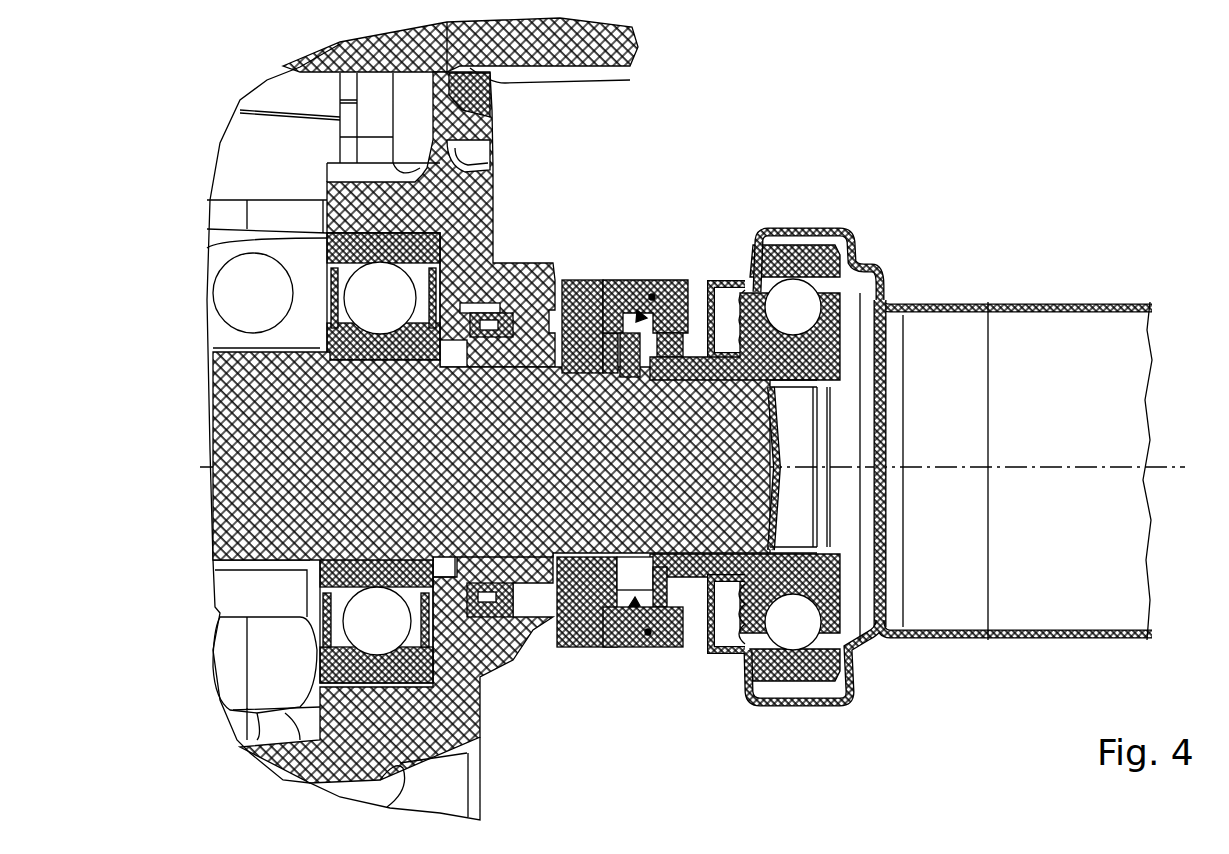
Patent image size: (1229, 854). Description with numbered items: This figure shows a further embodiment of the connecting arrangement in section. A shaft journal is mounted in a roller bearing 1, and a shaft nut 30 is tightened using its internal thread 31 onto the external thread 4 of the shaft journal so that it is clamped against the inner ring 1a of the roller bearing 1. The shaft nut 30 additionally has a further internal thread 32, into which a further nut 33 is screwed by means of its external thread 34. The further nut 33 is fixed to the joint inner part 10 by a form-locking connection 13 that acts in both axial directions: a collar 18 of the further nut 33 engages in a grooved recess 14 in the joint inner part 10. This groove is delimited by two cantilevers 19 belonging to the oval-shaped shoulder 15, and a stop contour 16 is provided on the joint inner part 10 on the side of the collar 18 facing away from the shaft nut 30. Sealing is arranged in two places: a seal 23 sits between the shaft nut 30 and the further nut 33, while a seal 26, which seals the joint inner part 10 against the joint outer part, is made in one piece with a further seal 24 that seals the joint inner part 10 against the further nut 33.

The roller bearing 1 is at (440, 240).
The inner ring 1a is at (478, 312).
The external thread 4 is at (590, 357).
The joint inner part 10 is at (847, 647).
The form-locking connection 13 is at (635, 600).
The grooved recess 14 is at (700, 400).
The shoulder 15 is at (647, 600).
The stop contour 16 is at (773, 557).
The collar 18 is at (660, 345).
The cantilevers 19 is at (773, 480).
The seal 23 is at (648, 635).
The further seal 24 is at (677, 620).
The seal 26 is at (723, 633).
The shaft nut 30 is at (573, 300).
The internal thread 31 is at (600, 367).
The further internal thread 32 is at (663, 367).
The further nut 33 is at (703, 322).
The external thread 34 is at (625, 333).